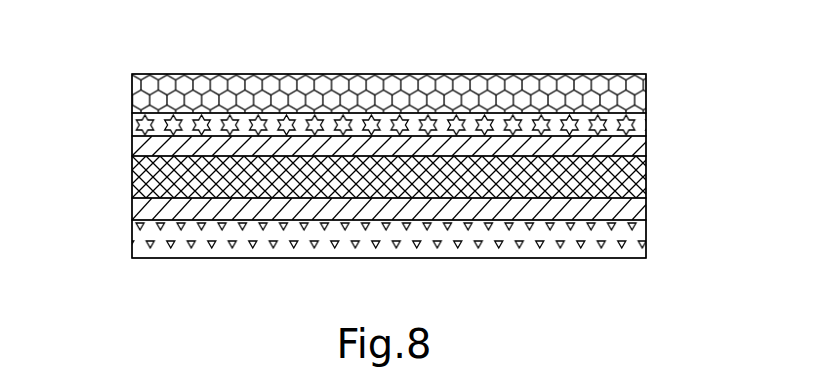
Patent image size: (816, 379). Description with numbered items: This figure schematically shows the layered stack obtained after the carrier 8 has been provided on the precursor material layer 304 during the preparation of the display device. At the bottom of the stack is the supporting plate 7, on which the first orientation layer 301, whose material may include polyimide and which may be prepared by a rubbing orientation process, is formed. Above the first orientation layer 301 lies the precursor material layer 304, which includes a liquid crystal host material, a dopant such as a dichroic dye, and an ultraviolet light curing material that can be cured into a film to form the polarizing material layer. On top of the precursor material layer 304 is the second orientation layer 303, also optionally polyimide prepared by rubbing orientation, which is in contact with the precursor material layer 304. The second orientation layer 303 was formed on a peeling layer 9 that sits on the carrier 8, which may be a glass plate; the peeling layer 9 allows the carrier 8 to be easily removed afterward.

The carrier 8 is at (140, 90).
The peeling layer 9 is at (628, 127).
The second orientation layer 303 is at (132, 143).
The precursor material layer 304 is at (645, 180).
The first orientation layer 301 is at (132, 208).
The supporting plate 7 is at (645, 240).